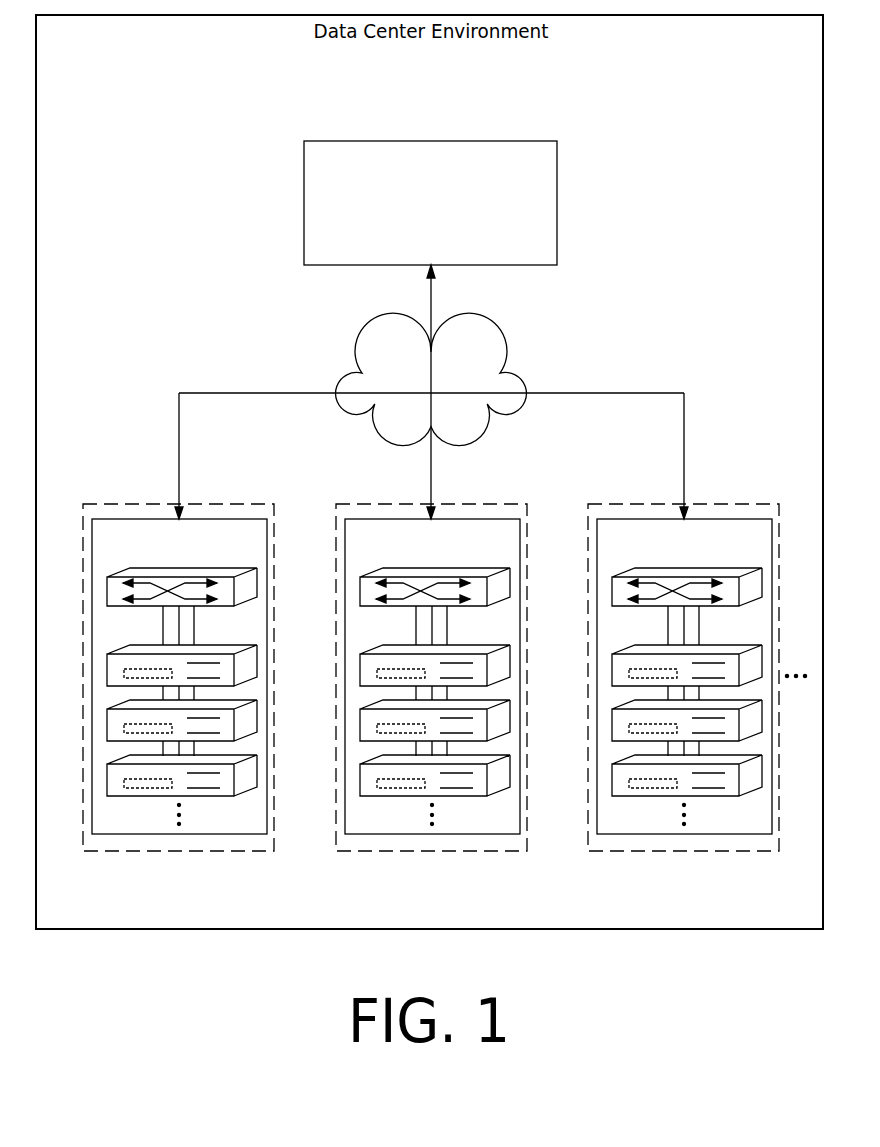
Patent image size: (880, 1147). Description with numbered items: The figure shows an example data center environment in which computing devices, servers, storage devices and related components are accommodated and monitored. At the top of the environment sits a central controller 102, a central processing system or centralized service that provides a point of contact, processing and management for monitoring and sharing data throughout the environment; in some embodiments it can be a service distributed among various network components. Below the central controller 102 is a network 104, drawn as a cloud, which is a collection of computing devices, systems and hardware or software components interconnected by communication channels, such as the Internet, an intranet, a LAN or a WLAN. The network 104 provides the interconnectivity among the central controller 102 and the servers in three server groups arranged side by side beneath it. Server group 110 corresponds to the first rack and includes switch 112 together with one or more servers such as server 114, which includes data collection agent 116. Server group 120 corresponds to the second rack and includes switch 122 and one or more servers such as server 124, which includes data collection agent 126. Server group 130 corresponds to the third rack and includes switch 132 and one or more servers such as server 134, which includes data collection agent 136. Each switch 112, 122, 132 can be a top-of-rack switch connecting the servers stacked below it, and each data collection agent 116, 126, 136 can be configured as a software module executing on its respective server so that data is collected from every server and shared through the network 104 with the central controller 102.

The central controller 102 is at (340, 141).
The network 104 is at (378, 346).
The server group 110 is at (142, 504).
The switch 112 is at (146, 567).
The server 114 is at (146, 645).
The data collection agent 116 is at (124, 672).
The server group 120 is at (409, 664).
The switch 122 is at (428, 573).
The server 124 is at (428, 716).
The data collection agent 126 is at (358, 662).
The server group 130 is at (661, 664).
The switch 132 is at (680, 573).
The server 134 is at (680, 716).
The data collection agent 136 is at (610, 662).